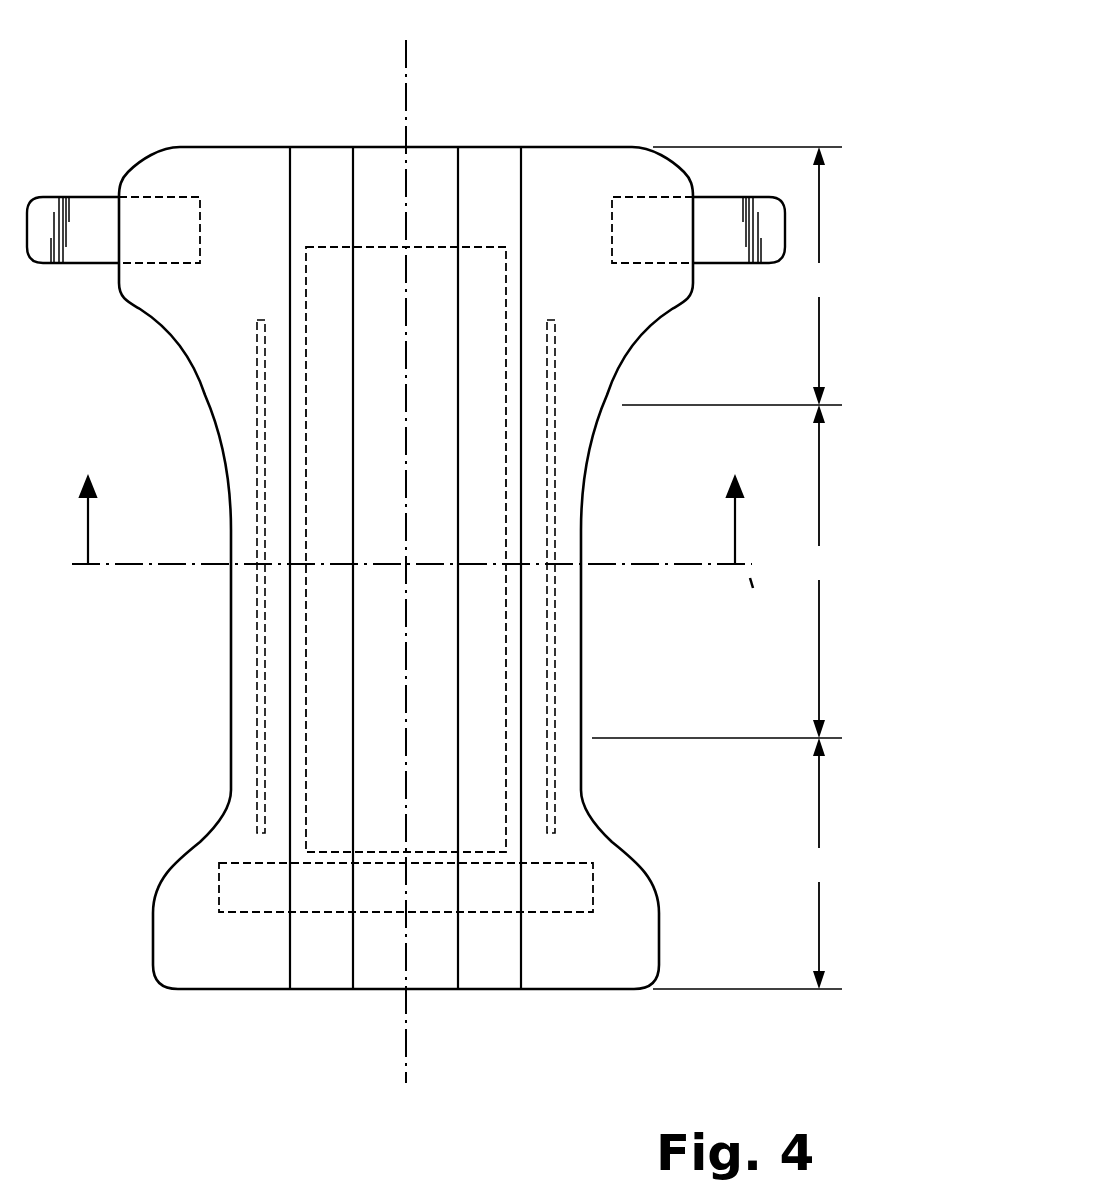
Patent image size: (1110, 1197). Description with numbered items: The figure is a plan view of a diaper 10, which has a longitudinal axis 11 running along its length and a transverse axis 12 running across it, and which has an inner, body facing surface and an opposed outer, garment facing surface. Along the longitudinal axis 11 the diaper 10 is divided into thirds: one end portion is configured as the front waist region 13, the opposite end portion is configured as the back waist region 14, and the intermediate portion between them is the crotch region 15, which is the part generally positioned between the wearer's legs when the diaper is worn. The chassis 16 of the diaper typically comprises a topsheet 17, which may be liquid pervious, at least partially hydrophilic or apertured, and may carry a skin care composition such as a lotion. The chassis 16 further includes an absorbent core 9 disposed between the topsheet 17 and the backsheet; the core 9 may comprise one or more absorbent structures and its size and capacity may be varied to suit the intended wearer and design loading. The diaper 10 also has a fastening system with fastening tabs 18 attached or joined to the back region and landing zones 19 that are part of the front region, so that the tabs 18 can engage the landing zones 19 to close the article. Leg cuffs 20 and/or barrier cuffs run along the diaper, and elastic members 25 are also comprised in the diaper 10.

The absorbent core 9 is at (484, 280).
The diaper 10 is at (699, 122).
The longitudinal axis 11 is at (406, 1055).
The transverse axis 12 is at (628, 563).
The front waist region 13 is at (747, 863).
The back waist region 14 is at (732, 276).
The crotch region 15 is at (717, 571).
The chassis 16 is at (456, 683).
The topsheet 17 is at (355, 690).
The fastening tabs 18 is at (85, 213).
The landing zones 19 is at (260, 897).
The leg cuffs 20 is at (290, 160).
The elastic members 25 is at (265, 470).